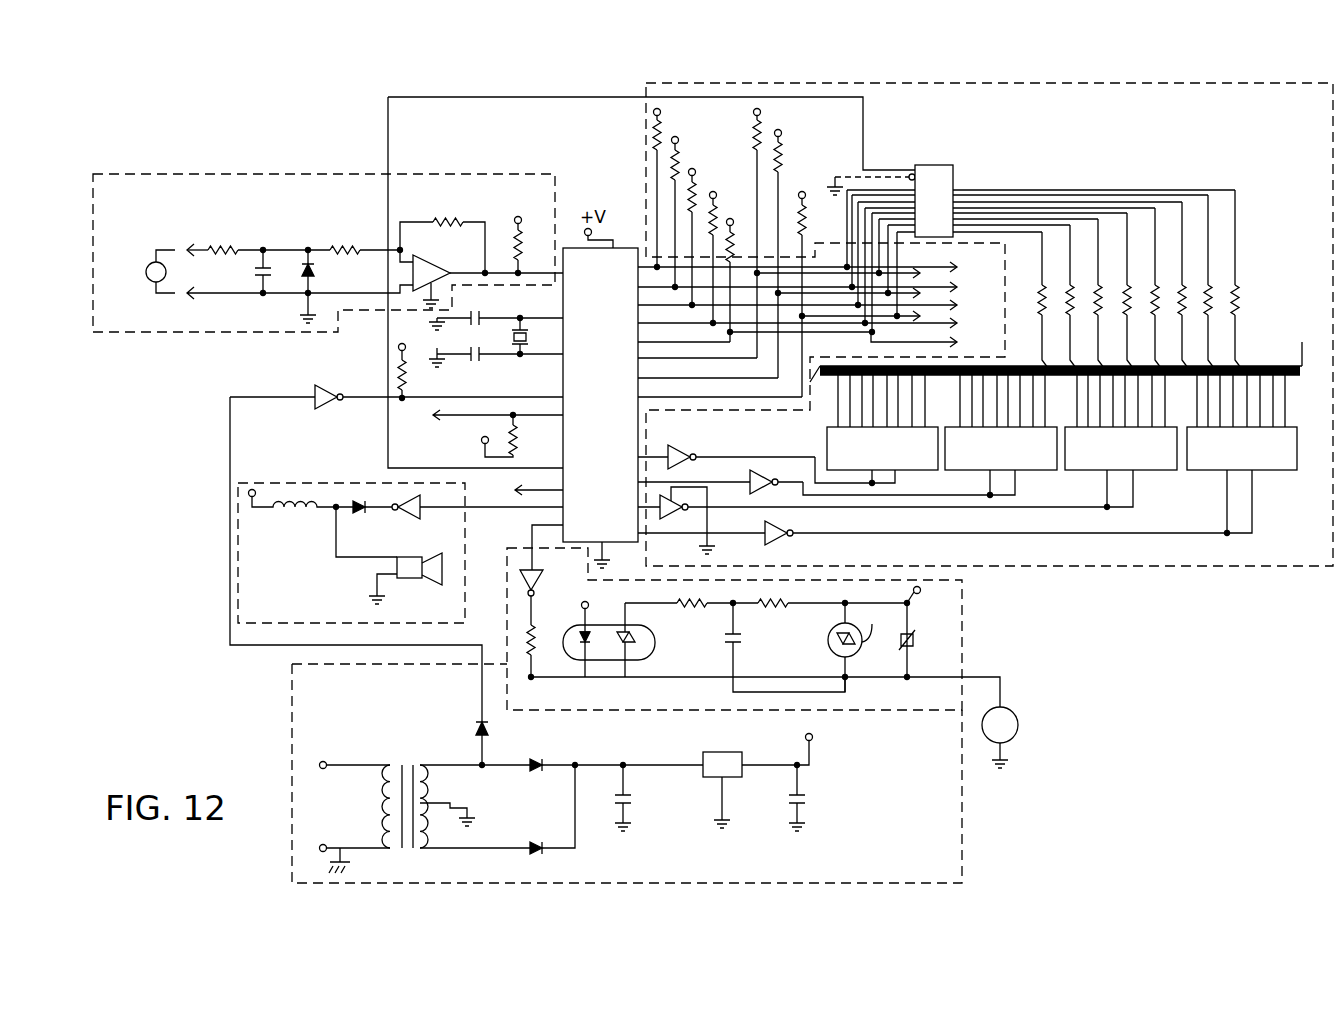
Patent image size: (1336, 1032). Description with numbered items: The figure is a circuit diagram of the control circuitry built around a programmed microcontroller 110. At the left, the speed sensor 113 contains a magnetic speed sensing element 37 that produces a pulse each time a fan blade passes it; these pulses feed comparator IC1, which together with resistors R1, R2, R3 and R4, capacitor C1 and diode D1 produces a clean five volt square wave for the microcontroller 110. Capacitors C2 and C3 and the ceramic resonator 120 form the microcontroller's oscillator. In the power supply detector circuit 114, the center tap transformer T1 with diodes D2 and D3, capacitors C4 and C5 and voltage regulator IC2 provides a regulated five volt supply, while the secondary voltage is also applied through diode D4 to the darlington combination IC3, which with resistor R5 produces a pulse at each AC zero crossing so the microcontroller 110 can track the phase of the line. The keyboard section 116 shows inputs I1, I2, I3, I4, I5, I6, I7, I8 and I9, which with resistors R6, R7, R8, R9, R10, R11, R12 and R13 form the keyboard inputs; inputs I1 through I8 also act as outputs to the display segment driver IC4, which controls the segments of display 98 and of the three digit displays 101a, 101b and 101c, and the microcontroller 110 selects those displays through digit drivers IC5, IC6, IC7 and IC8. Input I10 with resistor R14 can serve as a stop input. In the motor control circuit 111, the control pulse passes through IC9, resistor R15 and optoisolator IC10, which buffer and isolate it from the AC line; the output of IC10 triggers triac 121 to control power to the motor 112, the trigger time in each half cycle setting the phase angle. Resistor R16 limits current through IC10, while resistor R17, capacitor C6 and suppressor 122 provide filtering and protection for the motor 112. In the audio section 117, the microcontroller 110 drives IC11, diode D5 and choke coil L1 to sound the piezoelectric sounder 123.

The speed sensing element 37 is at (150, 263).
The speed sensor 113 is at (233, 173).
The resistor R1 is at (258, 240).
The resistor R2 is at (364, 244).
The capacitor C1 is at (251, 272).
The diode D1 is at (322, 286).
The comparator IC1 is at (488, 277).
The resistor R3 is at (444, 236).
The resistor R4 is at (528, 234).
The microcontroller 110 is at (600, 408).
The capacitor C2 is at (496, 311).
The capacitor C3 is at (496, 348).
The ceramic resonator 120 is at (535, 336).
The resistor R5 is at (416, 368).
The darlington combination IC3 is at (396, 385).
The input I10 is at (480, 417).
The resistor R14 is at (506, 435).
The input I9 is at (516, 492).
The audible alarm circuit 117 is at (306, 483).
The audio driver IC11 is at (464, 520).
The diode D5 is at (356, 523).
The choke coil L1 is at (294, 513).
The piezoelectric sounder 123 is at (913, 591).
The display and selector circuit 116 is at (1230, 83).
The resistor R6 is at (657, 137).
The resistor R7 is at (675, 163).
The resistor R8 is at (692, 188).
The resistor R9 is at (713, 210).
The resistor R10 is at (730, 245).
The resistor R11 is at (753, 225).
The resistor R12 is at (800, 245).
The resistor R13 is at (821, 283).
The display segment driver IC4 is at (1034, 266).
The input I1 is at (807, 267).
The input I2 is at (848, 275).
The input I3 is at (807, 288).
The input I4 is at (858, 295).
The input I5 is at (807, 306).
The input I6 is at (870, 317).
The input I7 is at (807, 324).
The input I8 is at (807, 342).
The display 98 is at (876, 456).
The digit display 101a is at (930, 462).
The digit display 101b is at (932, 468).
The digit display 101c is at (1045, 481).
The digit driver IC5 is at (726, 445).
The digit driver IC6 is at (720, 478).
The digit driver IC7 is at (672, 513).
The digit driver IC8 is at (730, 540).
The buffer IC9 is at (542, 575).
The motor control circuit 111 is at (962, 603).
The resistor R15 is at (516, 652).
The optoisolator IC10 is at (630, 632).
The resistor R16 is at (691, 613).
The resistor R17 is at (834, 613).
The capacitor C6 is at (785, 647).
The triac 121 is at (859, 647).
The suppressor 122 is at (925, 640).
The motor 112 is at (1018, 728).
The power supply detector circuit 114 is at (292, 778).
The center tap transformer T1 is at (398, 804).
The diode D4 is at (465, 742).
The diode D2 is at (561, 777).
The diode D3 is at (497, 809).
The capacitor C4 is at (636, 797).
The voltage regulator IC2 is at (722, 777).
The capacitor C5 is at (791, 774).